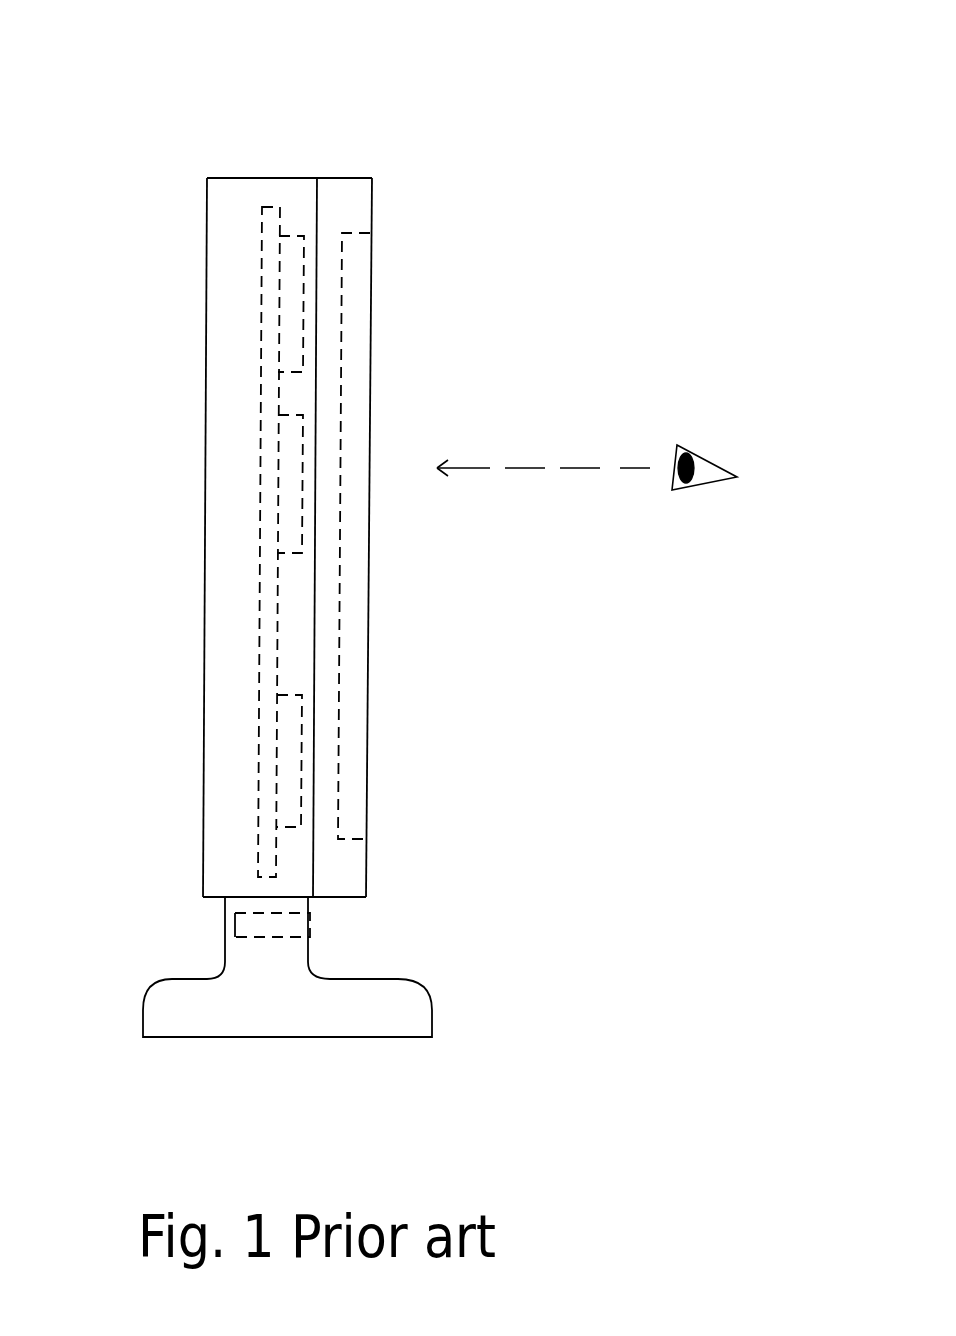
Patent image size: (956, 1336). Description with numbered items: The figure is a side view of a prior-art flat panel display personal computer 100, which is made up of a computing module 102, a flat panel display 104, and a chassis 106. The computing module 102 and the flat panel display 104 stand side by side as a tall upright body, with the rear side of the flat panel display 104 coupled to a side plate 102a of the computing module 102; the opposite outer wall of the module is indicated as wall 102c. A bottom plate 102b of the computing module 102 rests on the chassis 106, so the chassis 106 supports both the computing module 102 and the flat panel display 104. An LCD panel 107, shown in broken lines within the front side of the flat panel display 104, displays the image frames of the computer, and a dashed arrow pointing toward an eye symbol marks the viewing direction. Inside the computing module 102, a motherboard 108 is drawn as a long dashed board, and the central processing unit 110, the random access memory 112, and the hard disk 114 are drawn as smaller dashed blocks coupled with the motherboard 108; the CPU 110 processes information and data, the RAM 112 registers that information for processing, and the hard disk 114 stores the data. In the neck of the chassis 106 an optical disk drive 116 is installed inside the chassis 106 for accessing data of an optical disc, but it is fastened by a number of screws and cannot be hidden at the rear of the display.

The flat panel display personal computer 100 is at (558, 74).
The computing module 102 is at (257, 172).
The side plate 102a is at (320, 207).
The bottom plate 102b is at (218, 898).
The rear wall of casing 102c is at (220, 220).
The flat panel display 104 is at (362, 218).
The chassis 106 is at (378, 1027).
The LCD panel 107 is at (355, 363).
The motherboard 108 is at (275, 663).
The central processing unit 110 is at (295, 236).
The random access memory 112 is at (283, 460).
The hard disk 114 is at (287, 803).
The optical disk drive 116 is at (293, 922).